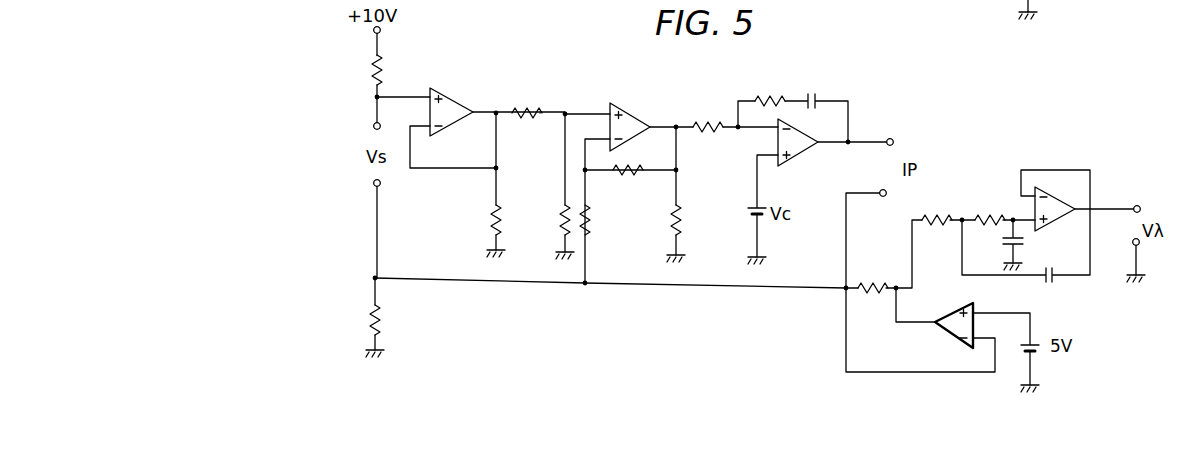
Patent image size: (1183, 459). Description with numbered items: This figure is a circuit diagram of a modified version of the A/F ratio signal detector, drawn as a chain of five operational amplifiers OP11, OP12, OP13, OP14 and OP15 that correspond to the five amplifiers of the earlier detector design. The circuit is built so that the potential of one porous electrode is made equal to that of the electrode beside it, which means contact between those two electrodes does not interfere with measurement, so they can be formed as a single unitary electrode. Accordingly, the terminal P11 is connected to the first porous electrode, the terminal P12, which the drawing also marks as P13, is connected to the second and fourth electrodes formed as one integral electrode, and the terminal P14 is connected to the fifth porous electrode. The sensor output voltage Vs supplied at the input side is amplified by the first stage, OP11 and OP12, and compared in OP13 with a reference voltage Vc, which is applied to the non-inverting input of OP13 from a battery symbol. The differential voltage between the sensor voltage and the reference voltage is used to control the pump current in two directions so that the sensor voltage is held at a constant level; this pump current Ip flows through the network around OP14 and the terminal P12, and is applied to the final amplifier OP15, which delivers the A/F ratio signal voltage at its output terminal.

The operational amplifier OP11 is at (456, 97).
The operational amplifier OP12 is at (645, 87).
The operational amplifier OP13 is at (800, 150).
The operational amplifier OP14 is at (949, 314).
The operational amplifier OP15 is at (1060, 215).
The terminal P11 is at (360, 132).
The terminal P12 is at (358, 185).
The terminal P13 is at (929, 194).
The terminal P14 is at (899, 132).